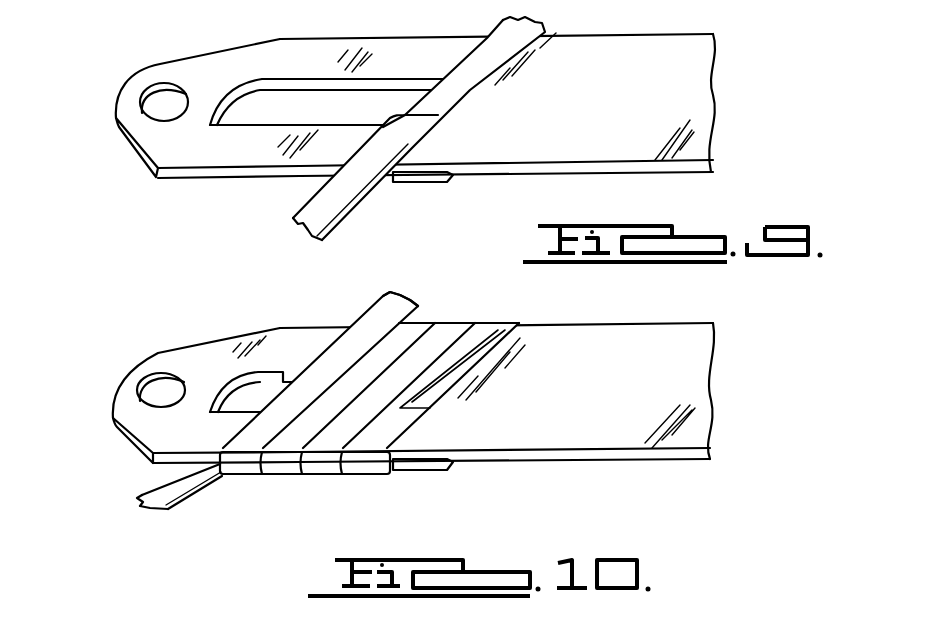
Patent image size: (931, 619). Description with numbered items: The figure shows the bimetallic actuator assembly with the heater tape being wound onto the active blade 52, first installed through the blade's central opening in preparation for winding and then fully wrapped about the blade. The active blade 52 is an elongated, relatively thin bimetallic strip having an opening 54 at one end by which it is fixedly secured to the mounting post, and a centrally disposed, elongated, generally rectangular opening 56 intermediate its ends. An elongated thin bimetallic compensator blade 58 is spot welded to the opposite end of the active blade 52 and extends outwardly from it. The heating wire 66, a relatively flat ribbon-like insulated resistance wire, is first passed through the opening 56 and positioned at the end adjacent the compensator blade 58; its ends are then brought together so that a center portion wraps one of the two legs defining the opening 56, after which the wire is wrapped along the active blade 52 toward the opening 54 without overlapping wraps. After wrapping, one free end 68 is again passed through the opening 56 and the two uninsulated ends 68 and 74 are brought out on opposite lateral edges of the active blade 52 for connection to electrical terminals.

In FIG. 9, the active blade 52 is at (313, 63).
In FIG. 10, the active blade 52 is at (137, 422).
In FIG. 9, the opening 54 is at (163, 110).
In FIG. 10, the opening 54 is at (163, 396).
In FIG. 9, the opening 56 is at (333, 119).
In FIG. 10, the opening 56 is at (250, 392).
In FIG. 9, the compensator blade 58 is at (630, 105).
In FIG. 10, the compensator blade 58 is at (612, 395).
In FIG. 9, the heating wire 66 is at (333, 203).
In FIG. 10, the heating wire 66 is at (450, 330).
In FIG. 10, the free end 68 is at (163, 488).
In FIG. 10, the free end 74 is at (405, 305).